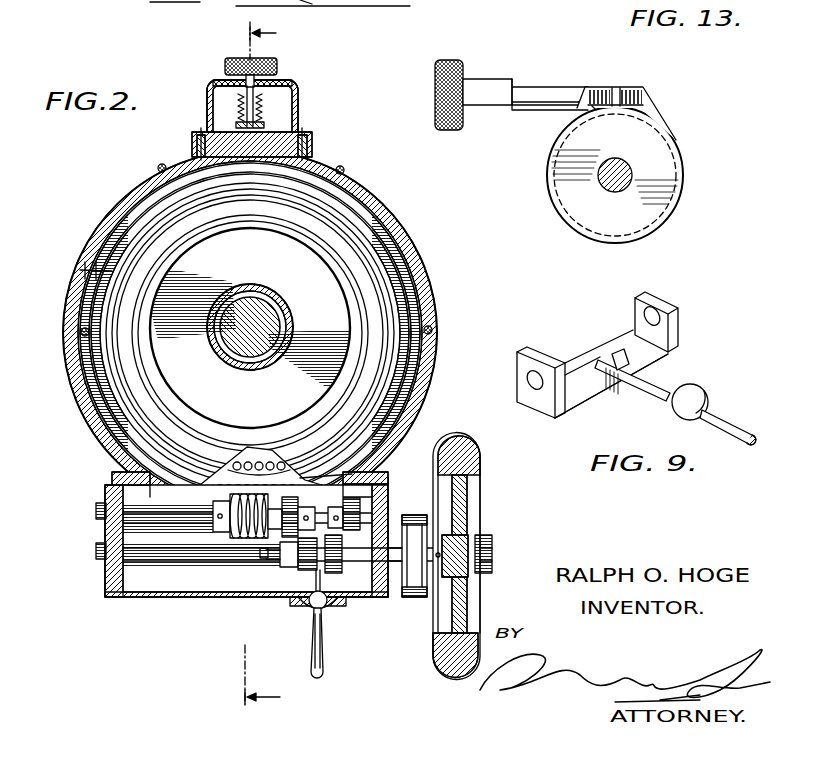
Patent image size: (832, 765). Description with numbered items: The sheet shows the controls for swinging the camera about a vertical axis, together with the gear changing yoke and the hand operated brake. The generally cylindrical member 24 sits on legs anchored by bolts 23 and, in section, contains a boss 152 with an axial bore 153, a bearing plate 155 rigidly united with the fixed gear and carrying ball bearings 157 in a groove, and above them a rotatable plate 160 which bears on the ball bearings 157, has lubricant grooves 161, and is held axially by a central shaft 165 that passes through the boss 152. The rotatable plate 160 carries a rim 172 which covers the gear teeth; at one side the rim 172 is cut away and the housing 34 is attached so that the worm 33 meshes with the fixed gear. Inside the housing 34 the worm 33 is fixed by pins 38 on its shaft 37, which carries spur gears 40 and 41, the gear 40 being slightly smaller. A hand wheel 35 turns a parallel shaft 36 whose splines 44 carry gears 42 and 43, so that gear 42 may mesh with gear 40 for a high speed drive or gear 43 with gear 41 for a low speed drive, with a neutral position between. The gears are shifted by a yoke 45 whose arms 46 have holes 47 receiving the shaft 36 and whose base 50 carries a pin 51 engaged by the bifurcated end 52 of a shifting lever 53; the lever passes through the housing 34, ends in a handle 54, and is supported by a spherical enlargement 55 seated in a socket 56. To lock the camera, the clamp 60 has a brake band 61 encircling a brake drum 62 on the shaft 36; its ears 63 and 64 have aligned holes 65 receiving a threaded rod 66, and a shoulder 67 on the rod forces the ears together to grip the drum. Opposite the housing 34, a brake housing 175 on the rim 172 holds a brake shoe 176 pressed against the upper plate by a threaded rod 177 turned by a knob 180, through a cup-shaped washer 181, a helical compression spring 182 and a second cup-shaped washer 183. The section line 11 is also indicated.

In FIG. 2, the section line 11- 11 is at (278, 366).
In FIG. 2, the bolts 23 is at (305, 2).
In FIG. 2, the generally cylindrical member 24 is at (432, 258).
In FIG. 2, the worm 33 is at (230, 524).
In FIG. 2, the housing 34 is at (145, 602).
In FIG. 2, the hand wheel 35 is at (478, 462).
In FIG. 2, the shaft 36 is at (190, 560).
In FIG. 13, the shaft 36 is at (605, 176).
In FIG. 2, the shaft 37 is at (118, 502).
In FIG. 2, the pins 38 is at (214, 512).
In FIG. 2, the spur gear 40 is at (360, 498).
In FIG. 2, the spur gear 41 is at (346, 474).
In FIG. 2, the gear 42 is at (330, 574).
In FIG. 2, the gear 43 is at (312, 560).
In FIG. 2, the splines 44 is at (272, 560).
In FIG. 9, the yoke 45 is at (612, 342).
In FIG. 2, the arms 46 is at (282, 578).
In FIG. 9, the arms 46 is at (520, 372).
In FIG. 9, the holes 47 is at (538, 372).
In FIG. 9, the base 50 is at (590, 408).
In FIG. 9, the pin 51 is at (650, 350).
In FIG. 9, the bifurcated end 52 is at (604, 388).
In FIG. 2, the shifting lever 53 is at (309, 604).
In FIG. 9, the shifting lever 53 is at (698, 384).
In FIG. 2, the handle 54 is at (323, 668).
In FIG. 9, the handle 54 is at (744, 446).
In FIG. 2, the spherical enlargement 55 is at (328, 604).
In FIG. 9, the spherical enlargement 55 is at (708, 396).
In FIG. 2, the socket 56 is at (316, 604).
In FIG. 13, the clamp 60 is at (698, 112).
In FIG. 2, the brake band 61 is at (414, 598).
In FIG. 2, the brake drum 62 is at (415, 536).
In FIG. 13, the brake drum 62 is at (668, 152).
In FIG. 13, the ear 63 is at (598, 86).
In FIG. 13, the ear 64 is at (634, 88).
In FIG. 13, the holes 65 is at (646, 92).
In FIG. 13, the threaded rod 66 is at (525, 90).
In FIG. 13, the shoulder 67 is at (594, 110).
In FIG. 2, the boss 152 is at (280, 312).
In FIG. 2, the axial bore 153 is at (280, 348).
In FIG. 2, the bearing plate 155 is at (258, 450).
In FIG. 2, the ball bearings 157 is at (234, 464).
In FIG. 2, the rotatable plate 160 is at (305, 386).
In FIG. 2, the grooves 161 is at (80, 270).
In FIG. 2, the central shaft 165 is at (252, 290).
In FIG. 2, the rim 172 is at (375, 208).
In FIG. 2, the brake housing 175 is at (298, 116).
In FIG. 2, the brake shoe 176 is at (204, 146).
In FIG. 2, the threaded rod 177 is at (282, 86).
In FIG. 2, the knob 180 is at (226, 60).
In FIG. 2, the cup-shaped washer 181 is at (238, 96).
In FIG. 2, the helical compression spring 182 is at (262, 110).
In FIG. 2, the cup-shaped washer 183 is at (272, 126).